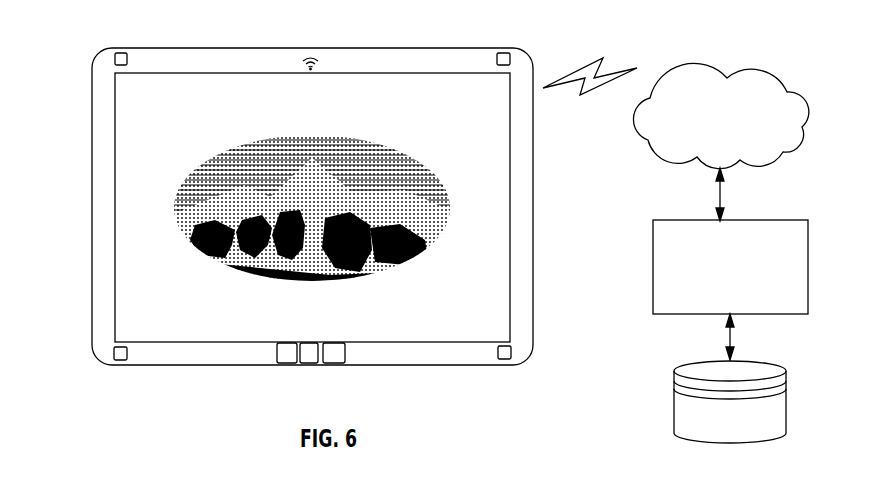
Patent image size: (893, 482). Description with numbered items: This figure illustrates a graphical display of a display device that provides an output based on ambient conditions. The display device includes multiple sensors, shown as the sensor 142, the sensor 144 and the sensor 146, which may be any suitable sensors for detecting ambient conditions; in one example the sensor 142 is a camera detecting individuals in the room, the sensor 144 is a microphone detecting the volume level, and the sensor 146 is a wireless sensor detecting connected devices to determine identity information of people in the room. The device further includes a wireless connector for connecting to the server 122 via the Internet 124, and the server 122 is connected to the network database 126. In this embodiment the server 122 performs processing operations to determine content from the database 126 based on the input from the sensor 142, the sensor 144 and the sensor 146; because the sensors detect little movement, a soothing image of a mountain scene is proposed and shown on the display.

The server 122 is at (653, 250).
The networked connection 124 is at (763, 66).
The network database 126 is at (674, 403).
The sensor 142 is at (111, 66).
The sensor 144 is at (128, 351).
The sensor 146 is at (497, 352).